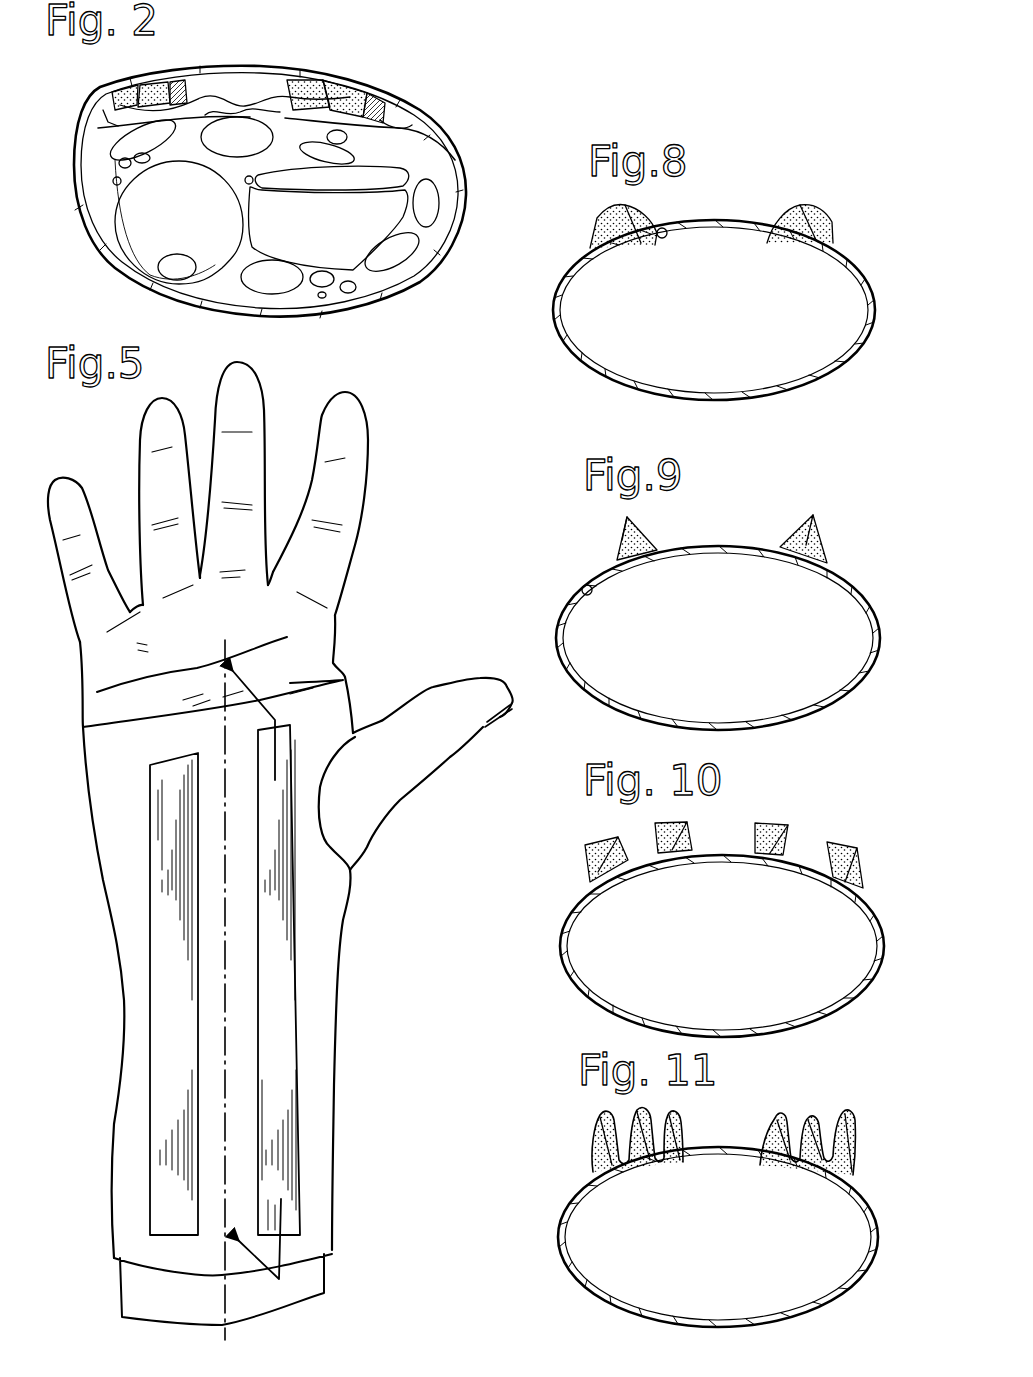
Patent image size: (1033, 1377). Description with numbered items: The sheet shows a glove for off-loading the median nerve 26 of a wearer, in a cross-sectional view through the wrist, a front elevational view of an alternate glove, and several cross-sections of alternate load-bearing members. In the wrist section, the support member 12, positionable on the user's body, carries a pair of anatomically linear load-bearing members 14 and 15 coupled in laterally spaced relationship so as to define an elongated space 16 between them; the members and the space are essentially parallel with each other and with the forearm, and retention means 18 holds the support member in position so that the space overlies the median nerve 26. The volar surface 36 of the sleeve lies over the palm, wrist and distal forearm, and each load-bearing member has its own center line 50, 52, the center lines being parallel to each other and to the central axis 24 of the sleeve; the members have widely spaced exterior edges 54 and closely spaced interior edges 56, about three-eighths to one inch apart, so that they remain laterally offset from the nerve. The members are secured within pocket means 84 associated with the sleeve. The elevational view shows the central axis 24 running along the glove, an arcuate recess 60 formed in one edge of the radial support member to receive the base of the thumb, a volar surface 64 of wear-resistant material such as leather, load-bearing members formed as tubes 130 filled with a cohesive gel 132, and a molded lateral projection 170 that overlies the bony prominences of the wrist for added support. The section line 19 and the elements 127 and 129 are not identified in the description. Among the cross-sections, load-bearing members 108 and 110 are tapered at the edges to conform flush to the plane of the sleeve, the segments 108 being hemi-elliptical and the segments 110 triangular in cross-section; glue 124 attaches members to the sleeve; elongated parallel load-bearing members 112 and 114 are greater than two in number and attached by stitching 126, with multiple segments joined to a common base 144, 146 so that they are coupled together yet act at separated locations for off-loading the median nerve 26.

In FIG. 2, the support member 12 is at (460, 170).
In FIG. 2, the load-bearing member 14 is at (337, 90).
In FIG. 5, the load-bearing member 14 is at (300, 942).
In FIG. 2, the load-bearing member 15 is at (115, 85).
In FIG. 5, the load-bearing member 15 is at (163, 977).
In FIG. 2, the elongated space 16 is at (222, 87).
In FIG. 2, the retention means 18 is at (257, 63).
In FIG. 2, the median nerve 26 is at (397, 127).
In FIG. 2, the volar surface 36 is at (207, 72).
In FIG. 2, the center line 50 is at (153, 83).
In FIG. 2, the center line 52 is at (332, 82).
In FIG. 2, the exterior edges 54 is at (383, 123).
In FIG. 2, the interior edges 56 is at (82, 183).
In FIG. 2, the pocket means 84 is at (123, 143).
In FIG. 5, the section line 19- 19 is at (239, 958).
In FIG. 5, the central axis 24 is at (228, 1033).
In FIG. 5, the arcuate recess 60 is at (295, 842).
In FIG. 5, the volar surface 64 is at (125, 790).
In FIG. 5, the tubes 130 is at (300, 1199).
In FIG. 5, the cohesive gel 132 is at (297, 1111).
In FIG. 5, the lateral projection 170 is at (143, 903).
In FIG. 8, the load-bearing member 108 is at (600, 231).
In FIG. 9, the load-bearing member 110 is at (620, 540).
In FIG. 10, the elongated parallel load-bearing member 112 is at (587, 860).
In FIG. 11, the elongated parallel load-bearing member 114 is at (600, 1140).
In FIG. 8, the glue 124 is at (664, 230).
In FIG. 9, the glue 124 is at (573, 600).
In FIG. 10, the stitching 126 is at (698, 843).
In FIG. 11, the stitching 126 is at (657, 1157).
In FIG. 9, the triangular spike 127 is at (652, 547).
In FIG. 9, the second triangular spike 129 is at (698, 543).
In FIG. 10, the common base 144 is at (607, 865).
In FIG. 11, the common base 146 is at (830, 1163).